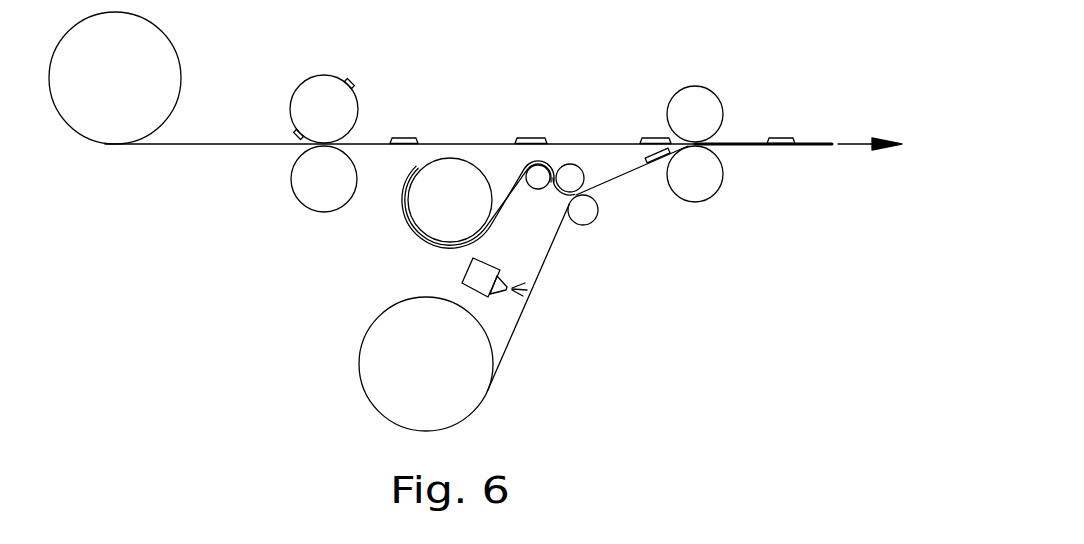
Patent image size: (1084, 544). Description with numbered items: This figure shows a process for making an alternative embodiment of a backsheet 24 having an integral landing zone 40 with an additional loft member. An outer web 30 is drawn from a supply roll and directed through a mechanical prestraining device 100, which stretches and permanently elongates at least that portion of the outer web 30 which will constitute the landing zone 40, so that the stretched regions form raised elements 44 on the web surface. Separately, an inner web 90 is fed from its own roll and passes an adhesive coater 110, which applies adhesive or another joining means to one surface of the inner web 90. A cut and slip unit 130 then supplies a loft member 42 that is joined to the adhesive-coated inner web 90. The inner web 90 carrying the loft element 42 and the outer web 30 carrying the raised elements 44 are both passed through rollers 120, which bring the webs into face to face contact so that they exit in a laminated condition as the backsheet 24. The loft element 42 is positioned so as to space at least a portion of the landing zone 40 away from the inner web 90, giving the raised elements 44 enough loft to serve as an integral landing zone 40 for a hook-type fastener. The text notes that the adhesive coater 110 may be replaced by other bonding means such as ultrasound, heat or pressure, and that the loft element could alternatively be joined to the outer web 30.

The backsheet 24 is at (738, 143).
The outer web 30 is at (460, 143).
The landing zone 40 is at (537, 138).
The loft member 42 is at (657, 163).
The raised elements 44 is at (404, 138).
The inner web 90 is at (542, 267).
The mechanical prestraining device 100 is at (284, 68).
The adhesive coater 110 is at (464, 272).
The rollers 120 is at (735, 201).
The cut and slip unit 130 is at (611, 233).